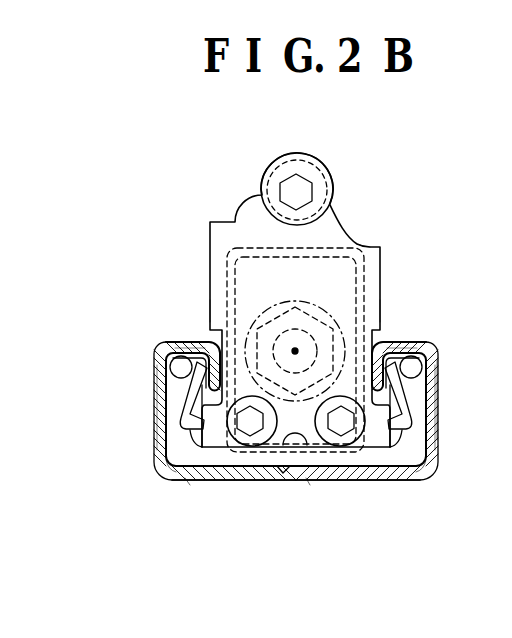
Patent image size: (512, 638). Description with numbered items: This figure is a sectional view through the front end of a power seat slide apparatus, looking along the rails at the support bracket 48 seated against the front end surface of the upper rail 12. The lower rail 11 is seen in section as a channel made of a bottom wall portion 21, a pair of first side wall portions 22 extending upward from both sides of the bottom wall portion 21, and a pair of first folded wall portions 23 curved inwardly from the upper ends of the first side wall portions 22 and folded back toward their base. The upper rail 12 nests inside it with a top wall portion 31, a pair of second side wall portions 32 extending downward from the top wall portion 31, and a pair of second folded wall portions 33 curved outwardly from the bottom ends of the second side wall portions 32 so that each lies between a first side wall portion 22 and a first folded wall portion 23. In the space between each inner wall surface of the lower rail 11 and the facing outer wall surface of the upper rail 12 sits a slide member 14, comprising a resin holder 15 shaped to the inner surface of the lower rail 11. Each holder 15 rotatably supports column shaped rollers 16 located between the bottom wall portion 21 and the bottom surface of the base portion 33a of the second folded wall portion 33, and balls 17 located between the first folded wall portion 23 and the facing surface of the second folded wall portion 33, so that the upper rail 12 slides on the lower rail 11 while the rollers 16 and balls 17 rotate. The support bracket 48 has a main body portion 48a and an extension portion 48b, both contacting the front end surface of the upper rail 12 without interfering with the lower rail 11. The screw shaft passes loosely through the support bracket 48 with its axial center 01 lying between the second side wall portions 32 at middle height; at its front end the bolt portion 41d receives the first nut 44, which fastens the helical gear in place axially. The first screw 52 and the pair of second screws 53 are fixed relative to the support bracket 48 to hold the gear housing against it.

The lower rail 11 is at (330, 553).
The upper rail 12 is at (434, 366).
The slide member 14 is at (163, 443).
The holder 15 is at (170, 466).
The roller 16 is at (188, 478).
The ball 17 is at (169, 362).
The bottom wall portion 21 is at (352, 470).
The first side wall portion 22 is at (155, 388).
The first folded wall portion 23 is at (185, 348).
The top wall portion 31 is at (312, 247).
The second side wall portion 32 is at (208, 310).
The second folded wall portion 33 is at (163, 412).
The base portion of the second folded wall portion 33a is at (220, 455).
The bolt portion 41d is at (272, 310).
The first nut 44 is at (338, 316).
The support bracket 48 is at (333, 205).
The main body portion 48a is at (358, 238).
The extension portion 48b is at (232, 460).
The first screw 52 is at (283, 157).
The second screw 53 is at (272, 475).
The axial center 01 is at (296, 350).